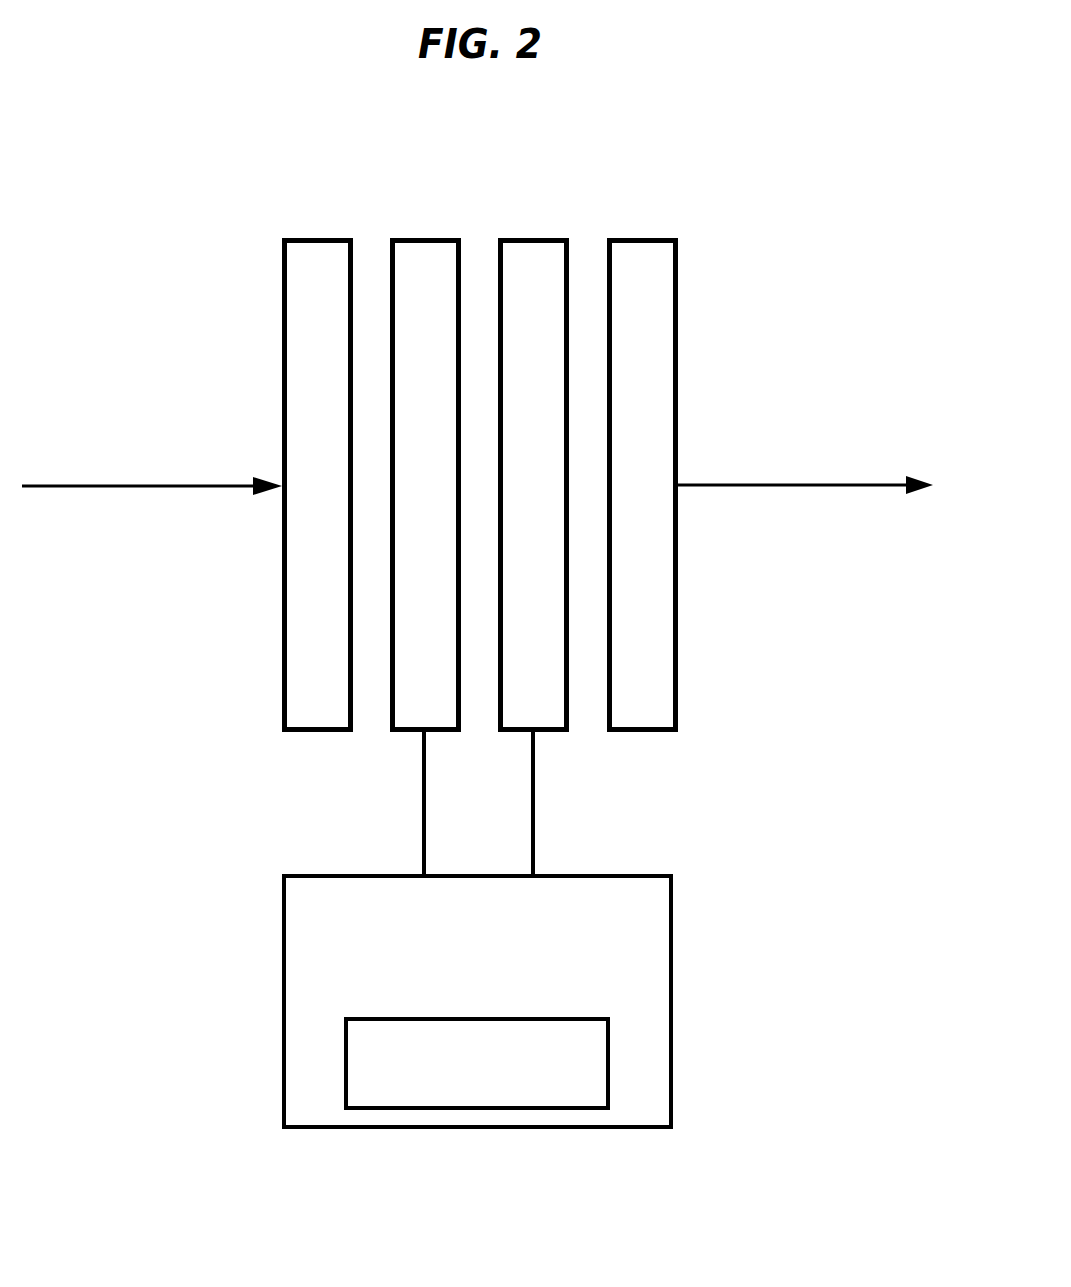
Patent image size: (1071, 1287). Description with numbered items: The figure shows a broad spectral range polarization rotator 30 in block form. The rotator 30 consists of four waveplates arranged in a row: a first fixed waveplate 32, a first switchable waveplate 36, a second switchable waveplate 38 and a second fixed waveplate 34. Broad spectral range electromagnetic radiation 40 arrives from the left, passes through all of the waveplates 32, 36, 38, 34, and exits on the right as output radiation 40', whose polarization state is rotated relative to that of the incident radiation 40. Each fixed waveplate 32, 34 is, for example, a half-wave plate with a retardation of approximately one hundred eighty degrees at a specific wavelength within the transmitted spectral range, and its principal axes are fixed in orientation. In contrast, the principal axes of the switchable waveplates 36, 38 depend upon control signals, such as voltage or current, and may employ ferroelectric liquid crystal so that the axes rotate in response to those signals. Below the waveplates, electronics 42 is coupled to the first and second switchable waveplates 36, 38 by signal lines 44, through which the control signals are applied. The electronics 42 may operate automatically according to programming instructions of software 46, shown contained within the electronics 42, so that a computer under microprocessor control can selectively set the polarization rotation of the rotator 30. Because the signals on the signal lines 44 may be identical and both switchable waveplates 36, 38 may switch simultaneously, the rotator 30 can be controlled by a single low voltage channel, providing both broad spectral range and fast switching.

The broad spectral range polarization rotator 30 is at (152, 146).
The first fixed waveplate 32 is at (282, 700).
The second fixed waveplate 34 is at (678, 697).
The first switchable waveplate 36 is at (396, 733).
The second switchable waveplate 38 is at (554, 733).
The broad spectral range electromagnetic radiation 40 is at (152, 515).
The output radiation 40' is at (805, 512).
The electronics 42 is at (494, 979).
The signal lines 44 is at (533, 806).
The software 46 is at (494, 1097).